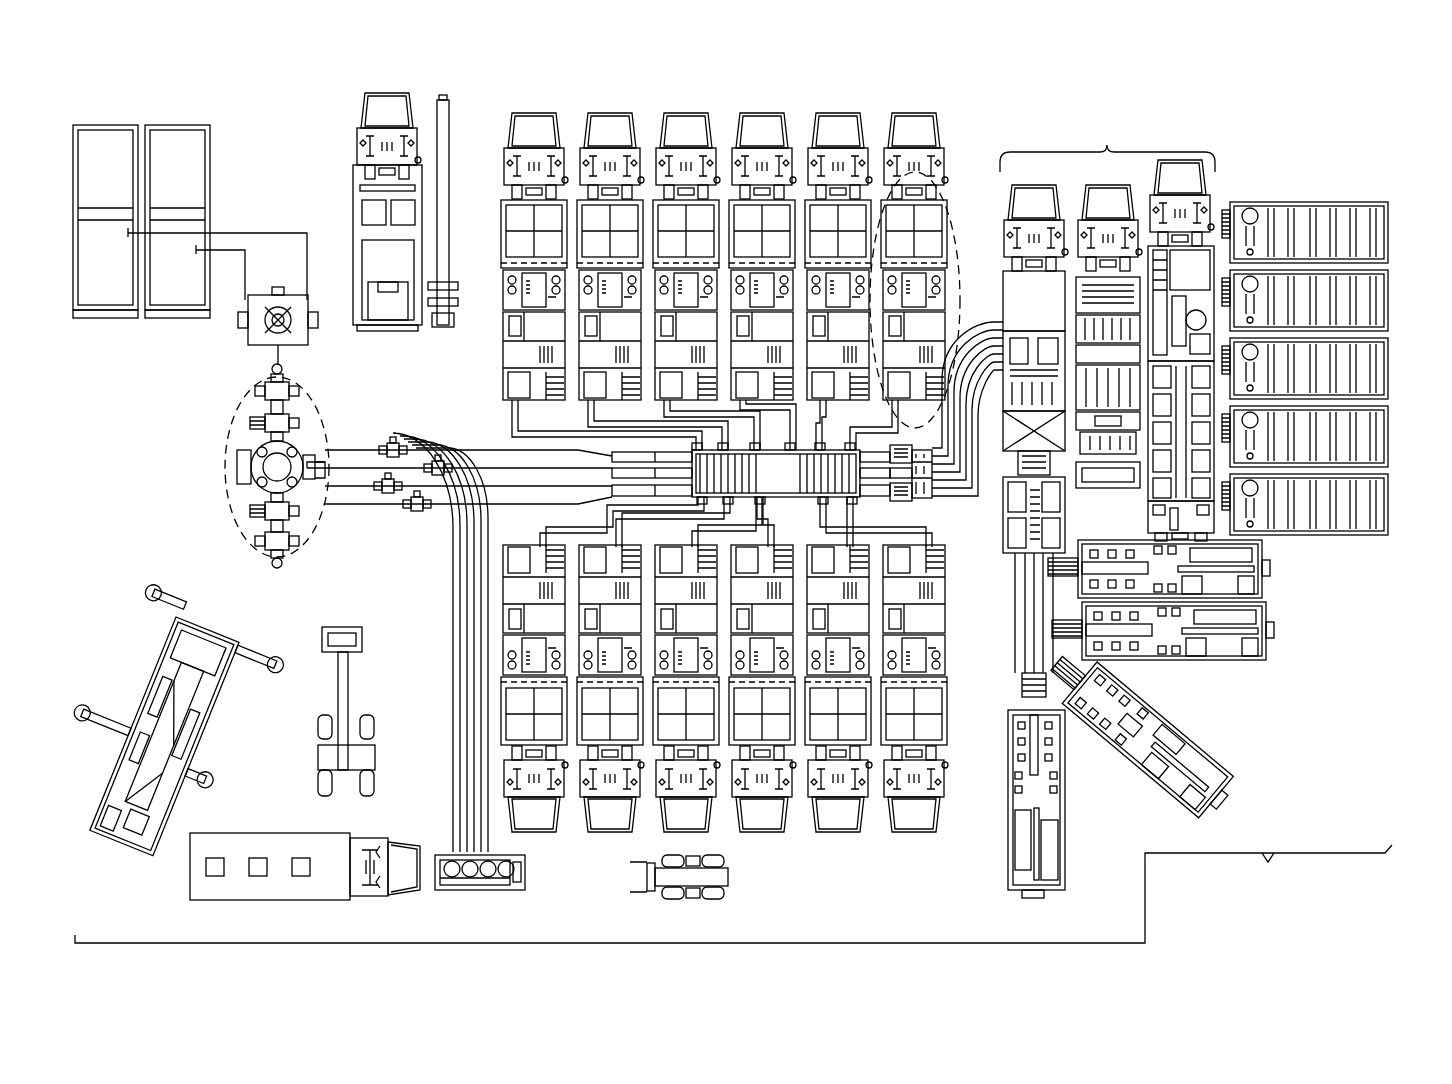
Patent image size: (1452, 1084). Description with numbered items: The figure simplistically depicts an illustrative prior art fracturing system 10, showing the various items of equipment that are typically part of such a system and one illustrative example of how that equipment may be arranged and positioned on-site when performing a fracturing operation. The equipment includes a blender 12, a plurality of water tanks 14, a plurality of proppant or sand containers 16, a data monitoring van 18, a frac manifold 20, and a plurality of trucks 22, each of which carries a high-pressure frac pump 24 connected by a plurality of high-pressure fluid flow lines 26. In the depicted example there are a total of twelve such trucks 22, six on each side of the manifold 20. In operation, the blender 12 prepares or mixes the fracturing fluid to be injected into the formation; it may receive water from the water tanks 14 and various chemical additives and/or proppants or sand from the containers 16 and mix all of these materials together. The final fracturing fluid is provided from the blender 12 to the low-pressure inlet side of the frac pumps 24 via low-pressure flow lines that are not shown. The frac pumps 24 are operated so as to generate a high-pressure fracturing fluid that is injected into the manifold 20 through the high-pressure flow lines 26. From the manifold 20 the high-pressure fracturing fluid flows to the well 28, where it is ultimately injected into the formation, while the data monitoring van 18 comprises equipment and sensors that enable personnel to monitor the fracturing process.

The fracturing system 10 is at (1273, 181).
The blender 12 is at (1110, 144).
The water tanks 14 is at (1386, 226).
The proppant or sand containers 16 is at (1268, 568).
The data monitoring van 18 is at (236, 838).
The frac manifold 20 is at (790, 483).
The trucks 22 is at (535, 113).
The high-pressure frac pump 24 is at (950, 232).
The high-pressure fluid flow lines 26 is at (506, 423).
The well 28 is at (232, 477).